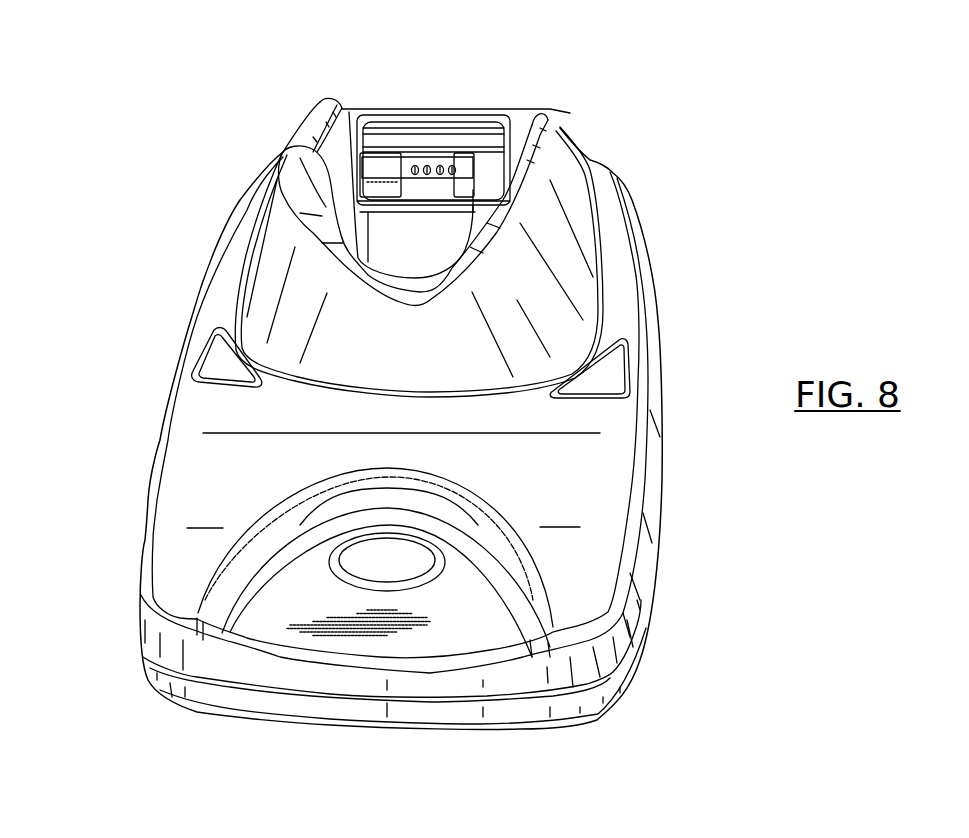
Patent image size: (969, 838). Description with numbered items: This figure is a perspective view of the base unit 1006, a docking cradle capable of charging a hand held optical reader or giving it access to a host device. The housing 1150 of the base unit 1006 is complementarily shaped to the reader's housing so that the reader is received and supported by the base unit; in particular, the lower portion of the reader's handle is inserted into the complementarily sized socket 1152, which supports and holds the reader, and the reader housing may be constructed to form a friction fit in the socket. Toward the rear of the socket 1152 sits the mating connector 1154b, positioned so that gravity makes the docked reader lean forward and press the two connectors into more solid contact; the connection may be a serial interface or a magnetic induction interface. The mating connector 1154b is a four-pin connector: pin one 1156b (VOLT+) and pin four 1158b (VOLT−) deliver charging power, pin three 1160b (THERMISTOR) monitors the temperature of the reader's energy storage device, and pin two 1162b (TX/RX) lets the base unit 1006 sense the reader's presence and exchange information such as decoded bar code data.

The base unit 1006 is at (138, 138).
The housing 1150 is at (661, 342).
The socket 1152 is at (448, 251).
The mating connector 1154b is at (466, 173).
The Pin 1 (VOLT+) 1156b is at (414, 165).
The Pin 4 (VOLT−) 1158b is at (453, 166).
The Pin 3 (THERMISTOR) 1160b is at (440, 165).
The Pin 2 (TX/RX) 1162b is at (427, 165).